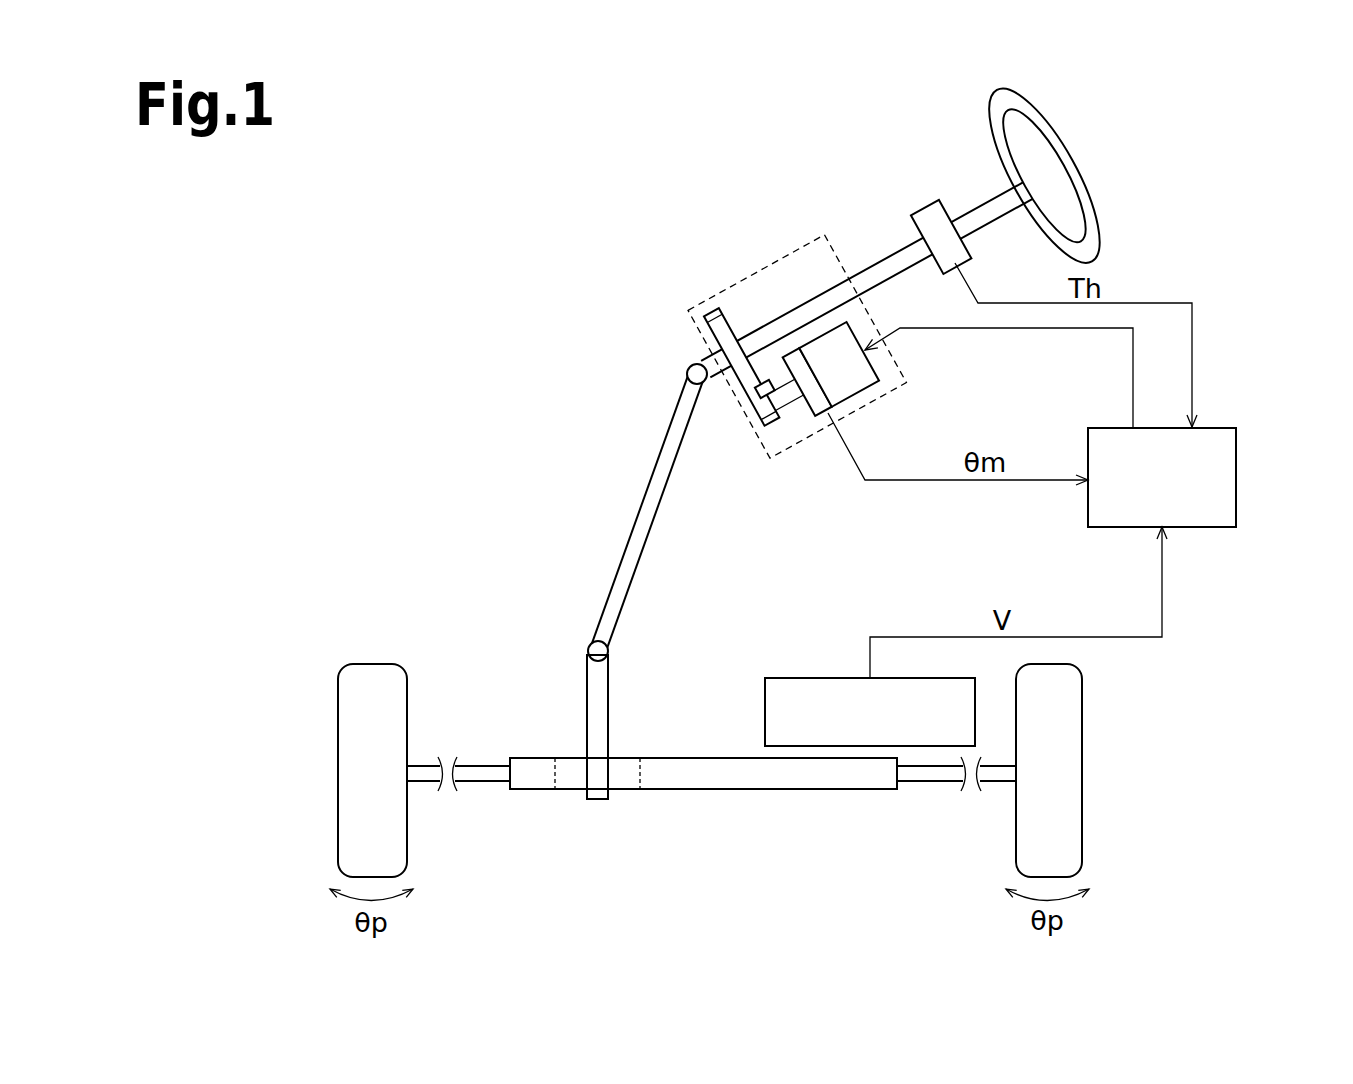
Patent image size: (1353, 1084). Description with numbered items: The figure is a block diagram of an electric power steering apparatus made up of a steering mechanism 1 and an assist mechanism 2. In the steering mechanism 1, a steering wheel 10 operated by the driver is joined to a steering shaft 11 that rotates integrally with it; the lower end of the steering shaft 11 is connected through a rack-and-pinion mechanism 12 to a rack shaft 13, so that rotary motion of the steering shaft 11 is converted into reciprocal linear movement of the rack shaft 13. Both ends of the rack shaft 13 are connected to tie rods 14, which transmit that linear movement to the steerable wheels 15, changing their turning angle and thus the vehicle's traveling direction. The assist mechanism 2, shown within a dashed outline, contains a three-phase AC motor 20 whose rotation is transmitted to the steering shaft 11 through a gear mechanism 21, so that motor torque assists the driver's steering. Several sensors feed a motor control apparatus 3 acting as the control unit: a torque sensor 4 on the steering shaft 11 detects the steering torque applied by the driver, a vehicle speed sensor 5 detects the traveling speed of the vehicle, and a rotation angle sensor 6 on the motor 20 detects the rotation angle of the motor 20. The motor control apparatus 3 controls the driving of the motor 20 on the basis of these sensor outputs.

The steering mechanism 1 is at (618, 462).
The assist mechanism 2 is at (770, 263).
The motor control apparatus 3 is at (1237, 478).
The torque sensor 4 is at (918, 207).
The vehicle speed sensor 5 is at (826, 677).
The rotation angle sensor 6 is at (808, 418).
The steering wheel 10 is at (1085, 167).
The steering shaft 11 is at (642, 502).
The rack-and-pinion mechanism 12 is at (653, 768).
The rack shaft 13 is at (735, 758).
The tie rods 14 is at (483, 783).
The steerable wheels 15 is at (338, 768).
The motor 20 is at (874, 372).
The gear mechanism 21 is at (750, 393).